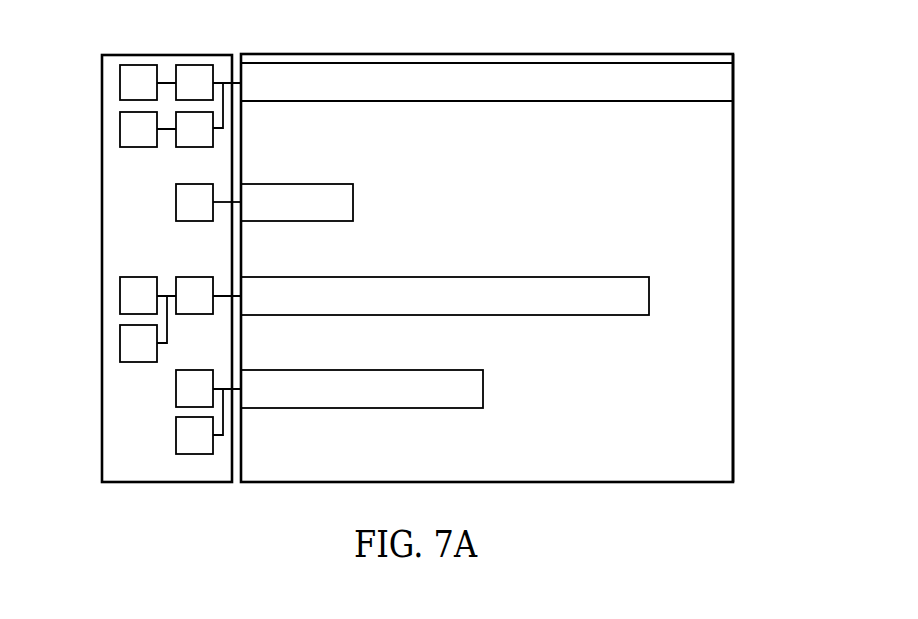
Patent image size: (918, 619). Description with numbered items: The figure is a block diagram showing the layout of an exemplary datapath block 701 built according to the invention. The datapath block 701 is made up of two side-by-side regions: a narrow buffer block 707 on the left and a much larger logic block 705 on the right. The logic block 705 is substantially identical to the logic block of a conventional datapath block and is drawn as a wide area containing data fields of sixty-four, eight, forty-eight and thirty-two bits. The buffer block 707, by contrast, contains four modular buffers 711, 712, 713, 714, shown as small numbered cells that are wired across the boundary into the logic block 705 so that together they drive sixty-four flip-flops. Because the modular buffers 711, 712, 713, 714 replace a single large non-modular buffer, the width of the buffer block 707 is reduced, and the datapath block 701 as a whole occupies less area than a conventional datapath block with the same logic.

The datapath block 701 is at (539, 268).
The logic block 705 is at (733, 376).
The buffer block 707 is at (135, 244).
The modular buffer 711 is at (143, 64).
The modular buffer 712 is at (200, 64).
The modular buffer 713 is at (120, 121).
The modular buffer 714 is at (185, 148).